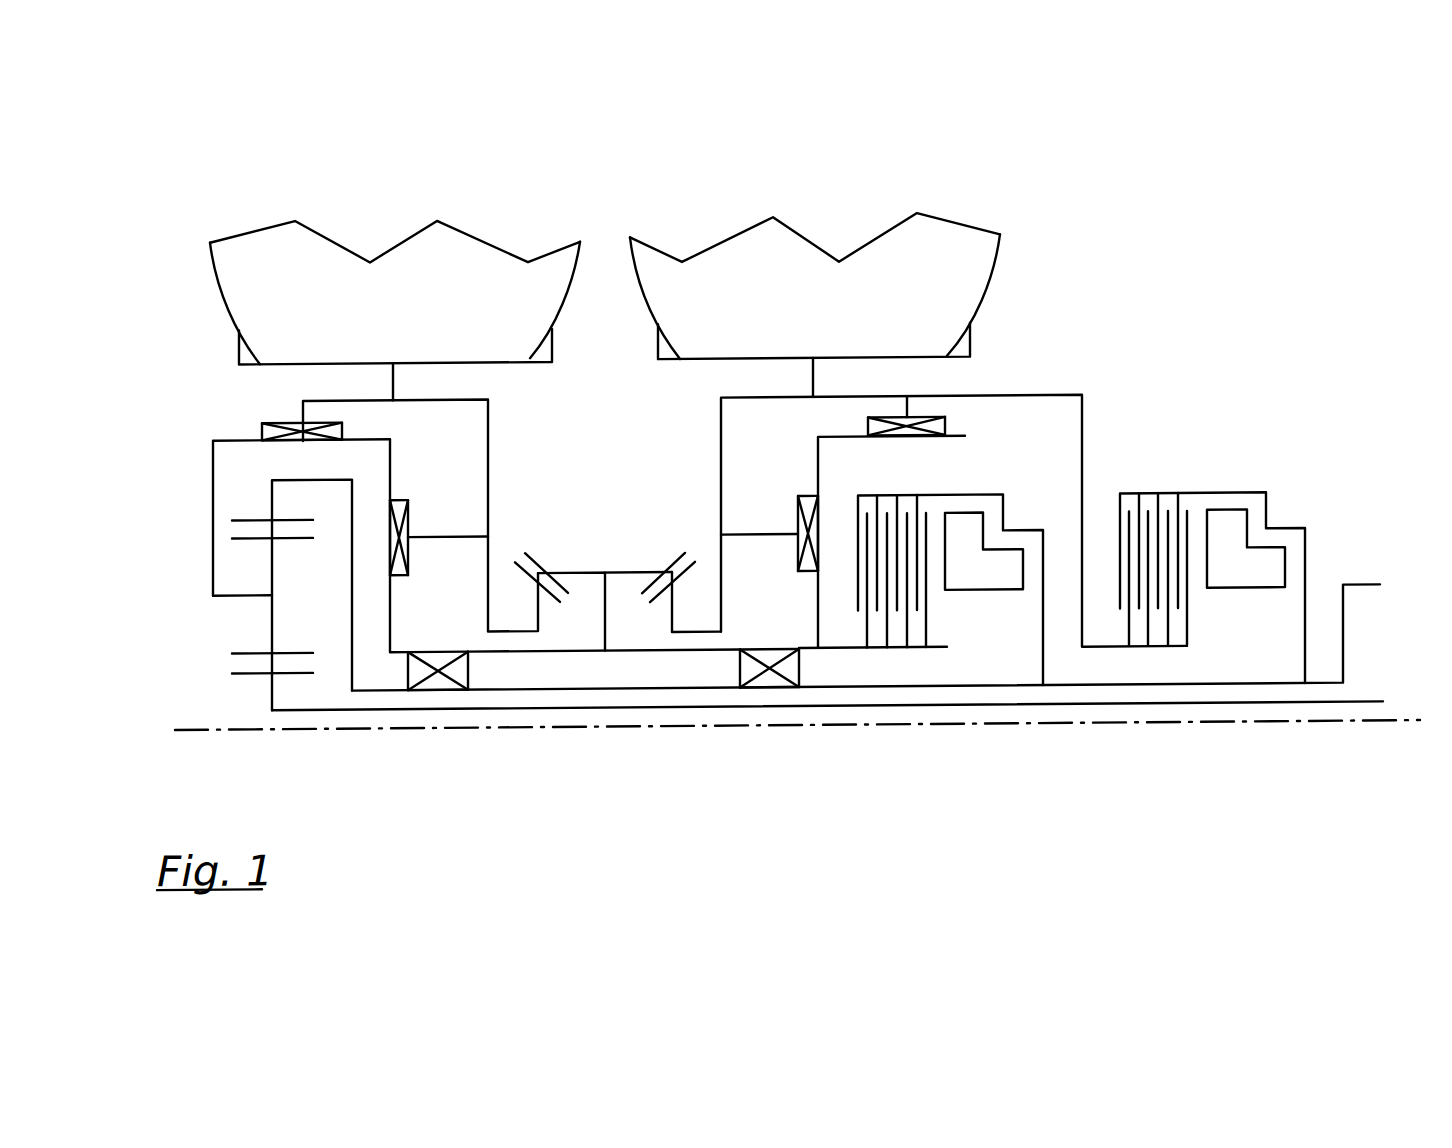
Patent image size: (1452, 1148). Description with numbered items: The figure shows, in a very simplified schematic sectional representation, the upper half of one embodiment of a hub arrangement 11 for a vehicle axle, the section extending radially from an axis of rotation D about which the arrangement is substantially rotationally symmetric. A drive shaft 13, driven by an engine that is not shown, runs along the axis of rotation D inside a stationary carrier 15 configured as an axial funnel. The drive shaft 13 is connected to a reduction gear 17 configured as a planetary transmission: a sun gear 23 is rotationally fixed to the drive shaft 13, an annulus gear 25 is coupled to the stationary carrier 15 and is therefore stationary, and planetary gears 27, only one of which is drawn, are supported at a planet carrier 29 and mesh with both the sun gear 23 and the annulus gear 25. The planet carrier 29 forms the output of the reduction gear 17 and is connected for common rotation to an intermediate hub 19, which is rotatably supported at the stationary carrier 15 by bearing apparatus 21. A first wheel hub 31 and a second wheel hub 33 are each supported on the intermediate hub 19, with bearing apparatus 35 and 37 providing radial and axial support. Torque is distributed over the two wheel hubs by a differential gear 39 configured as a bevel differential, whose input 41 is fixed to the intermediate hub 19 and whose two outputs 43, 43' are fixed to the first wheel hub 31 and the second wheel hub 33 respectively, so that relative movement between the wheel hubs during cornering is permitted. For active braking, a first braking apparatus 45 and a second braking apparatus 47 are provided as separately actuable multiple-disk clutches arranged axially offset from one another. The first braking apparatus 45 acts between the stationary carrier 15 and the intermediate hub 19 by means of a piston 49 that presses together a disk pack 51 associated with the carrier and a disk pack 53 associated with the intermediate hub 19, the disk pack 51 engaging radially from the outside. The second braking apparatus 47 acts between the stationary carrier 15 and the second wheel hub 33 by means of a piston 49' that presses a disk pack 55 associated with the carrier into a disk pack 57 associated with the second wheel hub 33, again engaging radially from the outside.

The hub arrangement 11 is at (1190, 222).
The drive shaft 13 is at (653, 711).
The stationary carrier 15 is at (872, 691).
The reduction gear 17 is at (276, 752).
The intermediate hub 19 is at (538, 654).
The bearing apparatus 21 is at (437, 681).
The sun gear 23 is at (272, 690).
The annulus gear 25 is at (272, 499).
The planetary gears 27 is at (272, 568).
The planet carrier 29 is at (237, 597).
The first wheel hub 31 is at (428, 401).
The second wheel hub 33 is at (765, 402).
The bearing apparatus 35 is at (272, 423).
The bearing apparatus 37 is at (405, 513).
The differential gear 39 is at (606, 460).
The input 41 is at (583, 575).
The output 43 is at (533, 545).
The output 43' is at (681, 544).
The first braking apparatus 45 is at (953, 665).
The second braking apparatus 47 is at (1182, 668).
The piston 49 is at (989, 577).
The piston 49' is at (1250, 575).
The disk pack 51 is at (855, 531).
The disk pack 53 is at (927, 623).
The disk pack 55 is at (1120, 517).
The disk pack 57 is at (1187, 620).
The axis of rotation D is at (1227, 730).